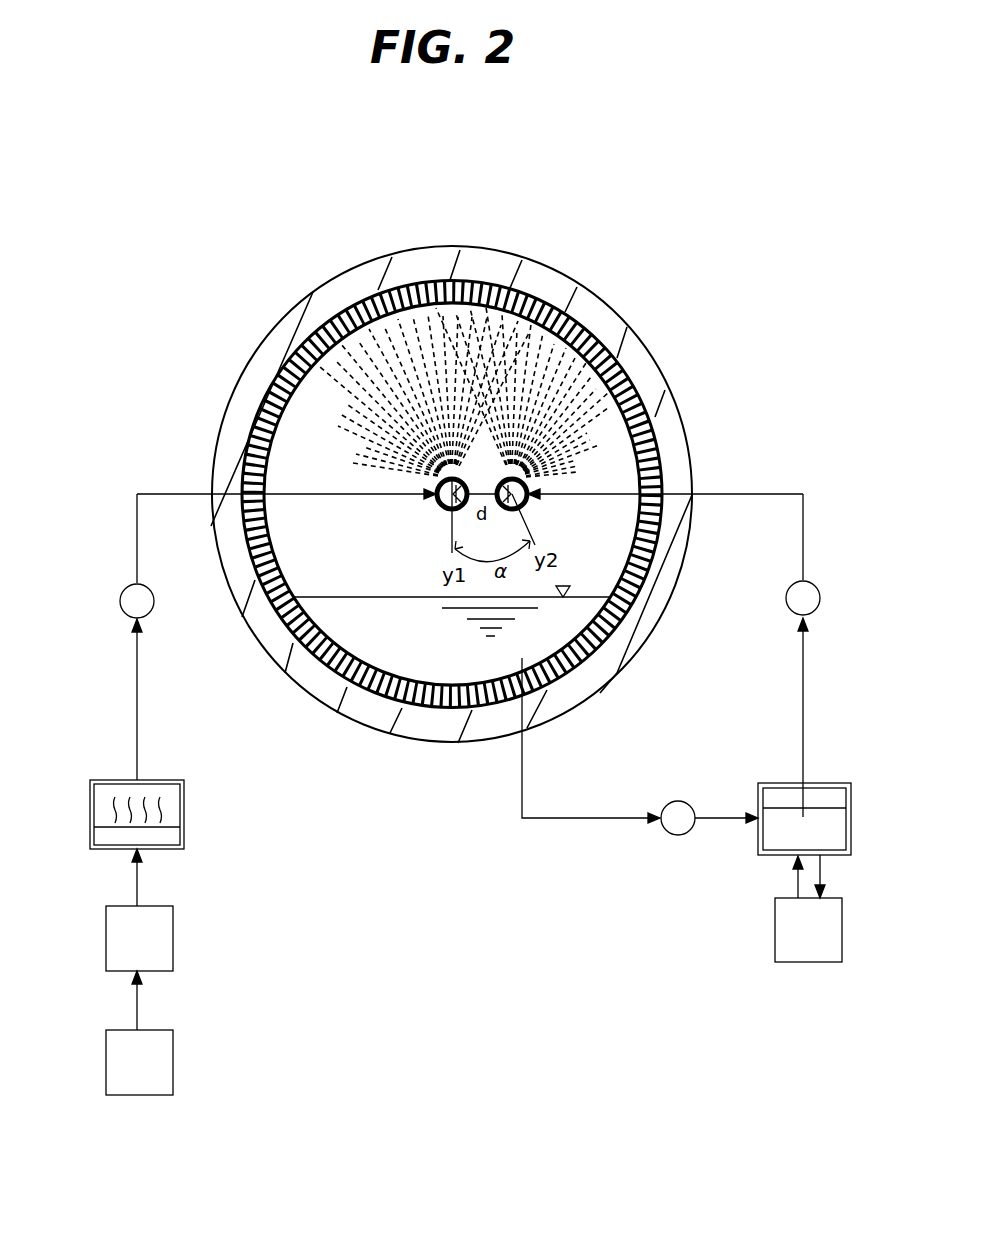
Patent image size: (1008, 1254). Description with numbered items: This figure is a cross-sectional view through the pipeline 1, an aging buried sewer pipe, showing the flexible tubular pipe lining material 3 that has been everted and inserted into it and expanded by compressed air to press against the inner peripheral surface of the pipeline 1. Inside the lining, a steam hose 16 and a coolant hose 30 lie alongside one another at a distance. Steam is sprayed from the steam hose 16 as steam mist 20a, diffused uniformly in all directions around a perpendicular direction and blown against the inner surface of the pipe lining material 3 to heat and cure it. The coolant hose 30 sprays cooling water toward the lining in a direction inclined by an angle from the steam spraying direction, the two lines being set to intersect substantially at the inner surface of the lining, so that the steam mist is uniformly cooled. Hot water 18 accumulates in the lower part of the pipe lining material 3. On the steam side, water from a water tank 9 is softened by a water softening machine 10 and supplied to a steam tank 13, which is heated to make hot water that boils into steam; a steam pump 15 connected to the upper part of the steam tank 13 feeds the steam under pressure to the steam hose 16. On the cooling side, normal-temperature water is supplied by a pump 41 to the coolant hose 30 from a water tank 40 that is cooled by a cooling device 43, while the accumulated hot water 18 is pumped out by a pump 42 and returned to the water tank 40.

The pipeline 1 is at (558, 268).
The pipe lining material 3 is at (340, 305).
The steam mist 20a is at (300, 348).
The steam hose 16 is at (436, 489).
The coolant hose 30 is at (527, 478).
The hot water 18 is at (445, 667).
The steam pump 15 is at (119, 599).
The steam tank 13 is at (184, 817).
The water softening machine 10 is at (173, 938).
The water tank 9 is at (173, 1060).
The pump 41 is at (822, 592).
The water tank 40 is at (827, 783).
The pump 42 is at (680, 840).
The cooling device 43 is at (795, 962).